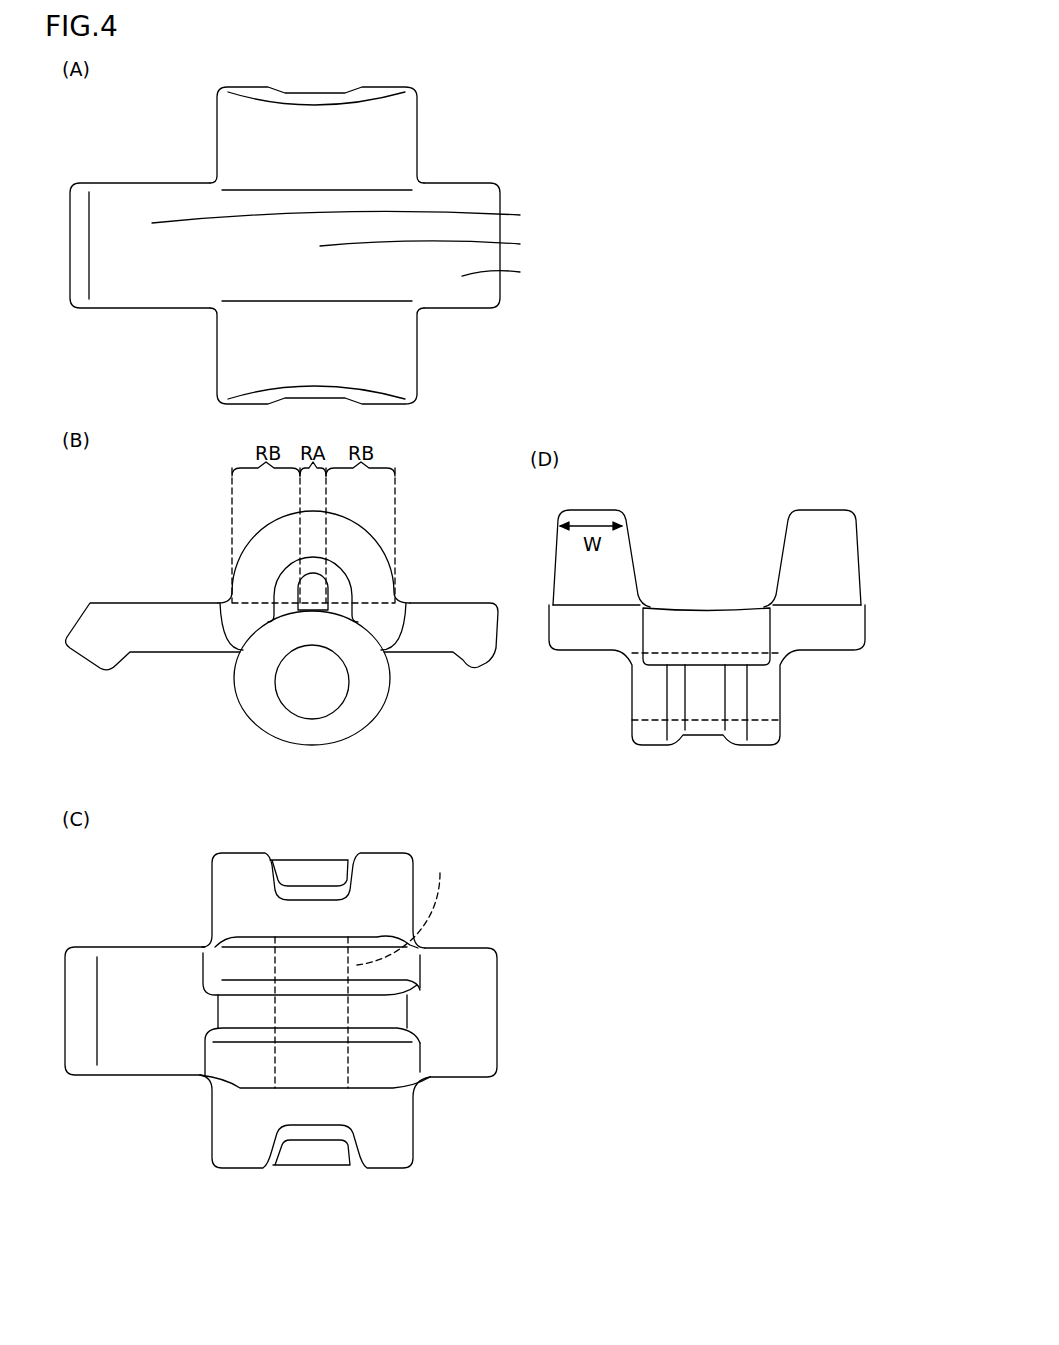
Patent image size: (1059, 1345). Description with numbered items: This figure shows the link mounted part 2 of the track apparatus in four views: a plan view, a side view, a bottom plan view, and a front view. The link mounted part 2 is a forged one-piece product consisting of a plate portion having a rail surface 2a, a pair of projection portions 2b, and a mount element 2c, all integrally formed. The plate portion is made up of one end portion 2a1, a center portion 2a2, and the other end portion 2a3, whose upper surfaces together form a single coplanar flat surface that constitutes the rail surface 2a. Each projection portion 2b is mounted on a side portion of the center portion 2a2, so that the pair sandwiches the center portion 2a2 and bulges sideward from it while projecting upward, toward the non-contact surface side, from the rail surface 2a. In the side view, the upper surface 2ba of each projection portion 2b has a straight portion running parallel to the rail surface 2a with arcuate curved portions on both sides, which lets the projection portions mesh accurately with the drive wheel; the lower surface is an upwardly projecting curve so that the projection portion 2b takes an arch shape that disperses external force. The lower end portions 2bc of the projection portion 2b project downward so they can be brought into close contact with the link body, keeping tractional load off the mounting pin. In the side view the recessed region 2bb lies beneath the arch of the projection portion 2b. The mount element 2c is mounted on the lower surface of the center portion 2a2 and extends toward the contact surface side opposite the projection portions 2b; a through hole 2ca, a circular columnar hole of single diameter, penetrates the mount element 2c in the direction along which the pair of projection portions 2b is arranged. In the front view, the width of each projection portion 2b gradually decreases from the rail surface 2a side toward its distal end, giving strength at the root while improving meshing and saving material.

The link mounted part 2 is at (158, 142).
The rail surface 2a is at (565, 205).
The one end portion 2a1 is at (140, 1090).
The center portion 2a2 is at (442, 244).
The other end portion 2a3 is at (477, 1015).
The projection portion 2b is at (383, 132).
The upper surface 2ba is at (357, 515).
The recess of protruding portion 2bb is at (347, 577).
The lower end portion 2bc is at (238, 633).
The mount element 2c is at (352, 710).
The through hole 2ca is at (290, 705).